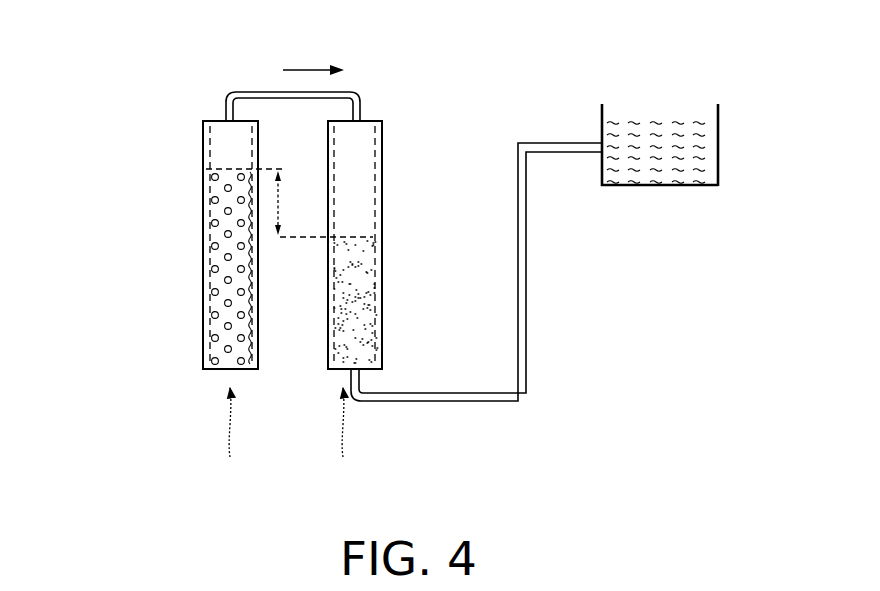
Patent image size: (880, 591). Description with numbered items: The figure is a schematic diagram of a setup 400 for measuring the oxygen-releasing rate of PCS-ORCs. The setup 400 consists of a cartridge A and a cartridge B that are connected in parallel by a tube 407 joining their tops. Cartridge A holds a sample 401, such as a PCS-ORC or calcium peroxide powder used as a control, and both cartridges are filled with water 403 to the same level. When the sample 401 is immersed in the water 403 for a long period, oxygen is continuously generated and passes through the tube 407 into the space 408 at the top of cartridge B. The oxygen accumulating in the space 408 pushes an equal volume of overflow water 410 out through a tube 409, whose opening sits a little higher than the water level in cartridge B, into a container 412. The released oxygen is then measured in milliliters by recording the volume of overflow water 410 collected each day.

The setup 400 is at (128, 81).
The sample 401 is at (204, 307).
The water 403 is at (199, 176).
The tube 407 is at (362, 90).
The space 408 is at (370, 165).
The tube 409 is at (527, 277).
The overflow water 410 is at (673, 186).
The container 412 is at (724, 110).